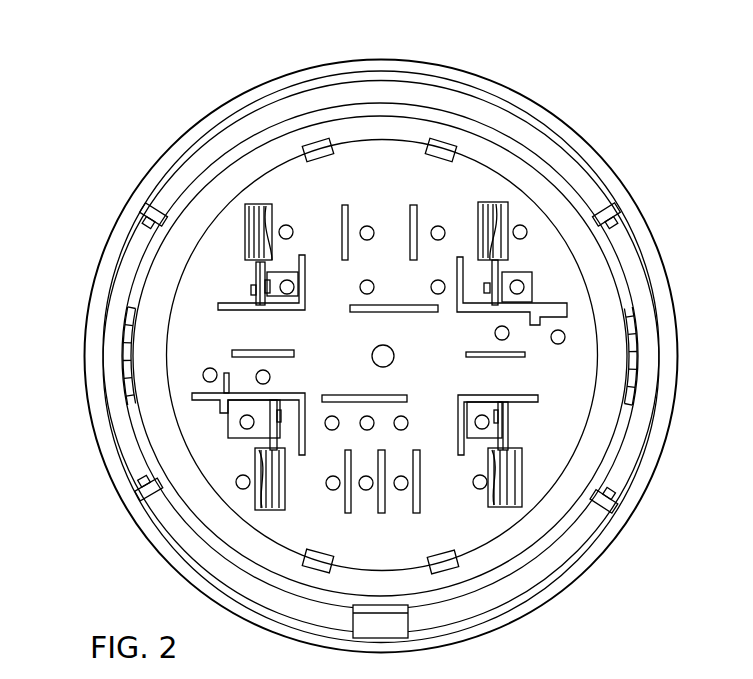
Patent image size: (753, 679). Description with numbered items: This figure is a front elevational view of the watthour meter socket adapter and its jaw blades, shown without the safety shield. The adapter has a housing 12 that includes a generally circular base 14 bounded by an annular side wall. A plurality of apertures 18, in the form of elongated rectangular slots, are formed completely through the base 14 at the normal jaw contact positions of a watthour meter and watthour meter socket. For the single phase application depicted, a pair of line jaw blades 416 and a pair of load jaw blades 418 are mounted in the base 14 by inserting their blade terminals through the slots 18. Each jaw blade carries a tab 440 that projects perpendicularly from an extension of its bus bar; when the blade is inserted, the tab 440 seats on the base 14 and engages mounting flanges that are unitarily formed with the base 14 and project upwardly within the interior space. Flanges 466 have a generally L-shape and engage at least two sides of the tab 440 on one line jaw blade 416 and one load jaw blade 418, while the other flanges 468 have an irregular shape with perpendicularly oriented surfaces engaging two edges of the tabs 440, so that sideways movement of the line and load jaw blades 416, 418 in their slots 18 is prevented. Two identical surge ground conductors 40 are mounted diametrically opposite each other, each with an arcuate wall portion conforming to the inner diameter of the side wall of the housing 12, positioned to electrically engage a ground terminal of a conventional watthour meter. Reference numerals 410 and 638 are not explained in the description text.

The housing 12 is at (137, 183).
The base 14 is at (200, 260).
The apertures 18 is at (342, 208).
The surge ground conductor 40 is at (127, 326).
The outer wall 410 is at (90, 388).
The line jaw blade 416 is at (248, 203).
The load jaw blade 418 is at (258, 505).
The tab 440 is at (278, 275).
The L-shaped flange 466 is at (233, 306).
The irregularly shaped flange 468 is at (457, 255).
The clip 638 is at (315, 153).